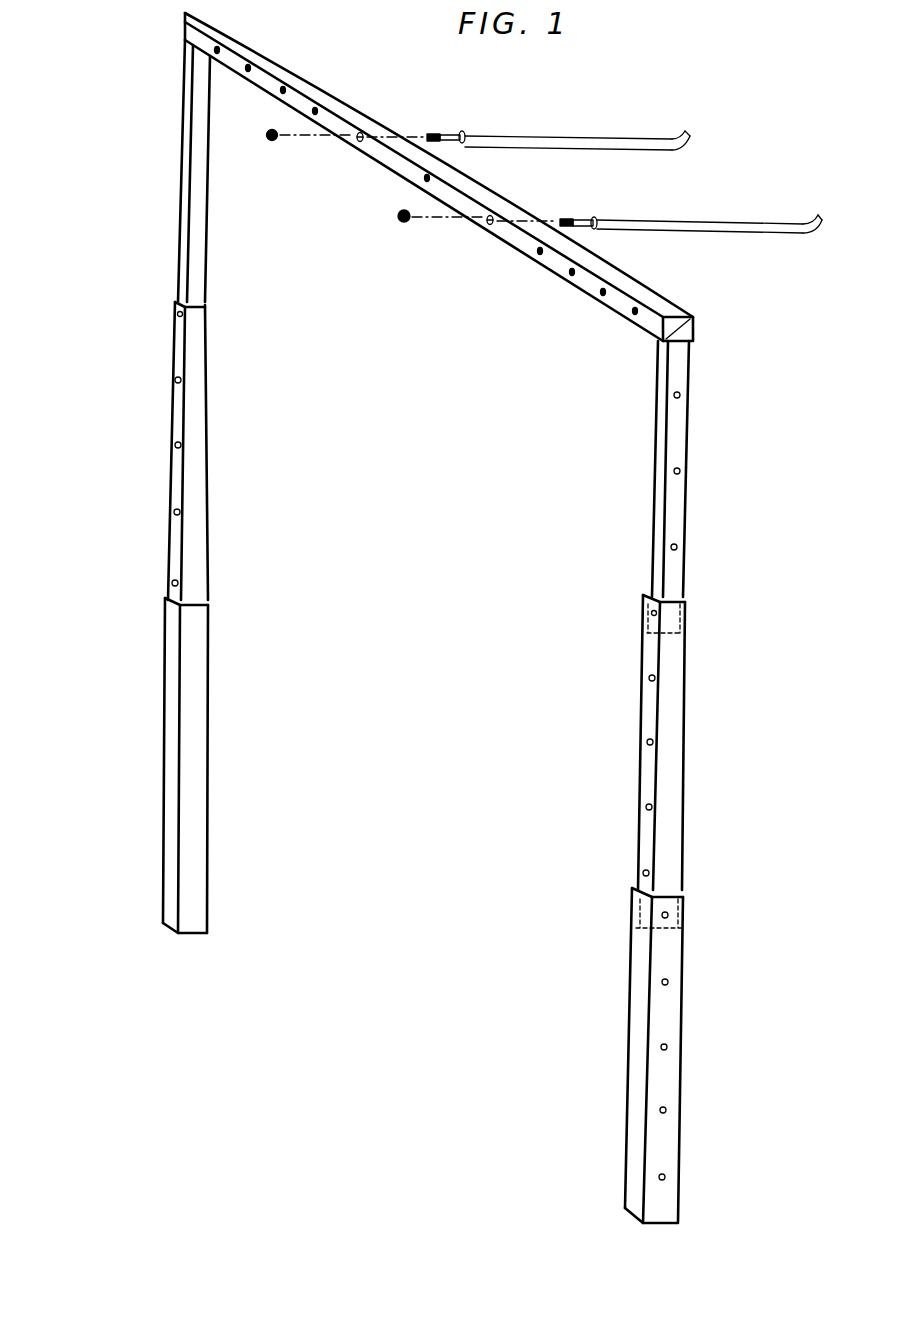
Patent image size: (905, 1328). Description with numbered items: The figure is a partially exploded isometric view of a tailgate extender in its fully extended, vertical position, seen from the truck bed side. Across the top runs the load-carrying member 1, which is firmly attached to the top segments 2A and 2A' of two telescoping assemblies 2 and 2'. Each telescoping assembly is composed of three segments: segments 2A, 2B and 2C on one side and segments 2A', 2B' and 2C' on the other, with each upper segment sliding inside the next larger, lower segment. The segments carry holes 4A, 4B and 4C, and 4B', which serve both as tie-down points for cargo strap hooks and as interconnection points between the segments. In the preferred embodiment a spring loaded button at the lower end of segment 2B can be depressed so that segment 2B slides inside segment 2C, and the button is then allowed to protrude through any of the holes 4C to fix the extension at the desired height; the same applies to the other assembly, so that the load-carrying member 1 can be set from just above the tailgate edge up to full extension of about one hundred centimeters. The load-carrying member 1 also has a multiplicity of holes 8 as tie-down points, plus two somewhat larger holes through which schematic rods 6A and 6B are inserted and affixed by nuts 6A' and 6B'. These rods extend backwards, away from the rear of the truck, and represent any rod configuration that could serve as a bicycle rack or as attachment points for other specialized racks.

The load-carrying member 1 is at (620, 270).
The telescoping assembly 2 is at (728, 781).
The top segment 2A is at (727, 469).
The middle segment 2B is at (716, 742).
The lower segment 2C is at (708, 1055).
The telescoping assembly 2' is at (255, 494).
The top segment 2A' is at (121, 171).
The middle segment 2B' is at (135, 451).
The lower segment 2C' is at (140, 765).
The holes 4A is at (674, 543).
The holes 4B is at (586, 715).
The holes 4C is at (663, 1104).
The holes 4B' is at (230, 482).
The schematic rod 6A is at (668, 205).
The schematic rod 6B is at (533, 121).
The nut 6A' is at (427, 241).
The nut 6B' is at (297, 160).
The holes 8 is at (605, 295).